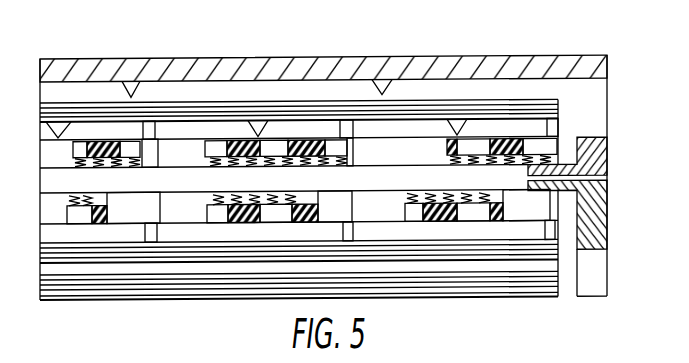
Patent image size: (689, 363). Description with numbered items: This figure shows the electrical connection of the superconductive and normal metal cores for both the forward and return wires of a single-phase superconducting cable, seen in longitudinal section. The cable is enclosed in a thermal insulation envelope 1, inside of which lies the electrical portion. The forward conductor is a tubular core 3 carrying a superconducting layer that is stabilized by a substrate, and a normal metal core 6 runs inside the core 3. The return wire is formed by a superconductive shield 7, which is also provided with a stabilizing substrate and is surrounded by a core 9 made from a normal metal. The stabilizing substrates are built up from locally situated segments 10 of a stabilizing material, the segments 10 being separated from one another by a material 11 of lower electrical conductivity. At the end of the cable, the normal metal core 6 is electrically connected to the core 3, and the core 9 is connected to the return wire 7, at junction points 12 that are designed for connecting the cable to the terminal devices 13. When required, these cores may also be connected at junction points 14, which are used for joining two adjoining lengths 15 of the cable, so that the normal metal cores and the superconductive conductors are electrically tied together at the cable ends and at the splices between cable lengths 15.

The thermal insulation envelope 1 is at (93, 66).
The core 3 is at (533, 215).
The normal metal core 6 is at (140, 288).
The superconductive shield 7 is at (426, 146).
The core 9 is at (224, 109).
The segments 10 is at (353, 148).
The material 11 is at (246, 225).
The junction points 12 is at (553, 230).
The terminal devices 13 is at (593, 256).
The junction points 14 is at (348, 140).
The lengths 15 is at (182, 158).